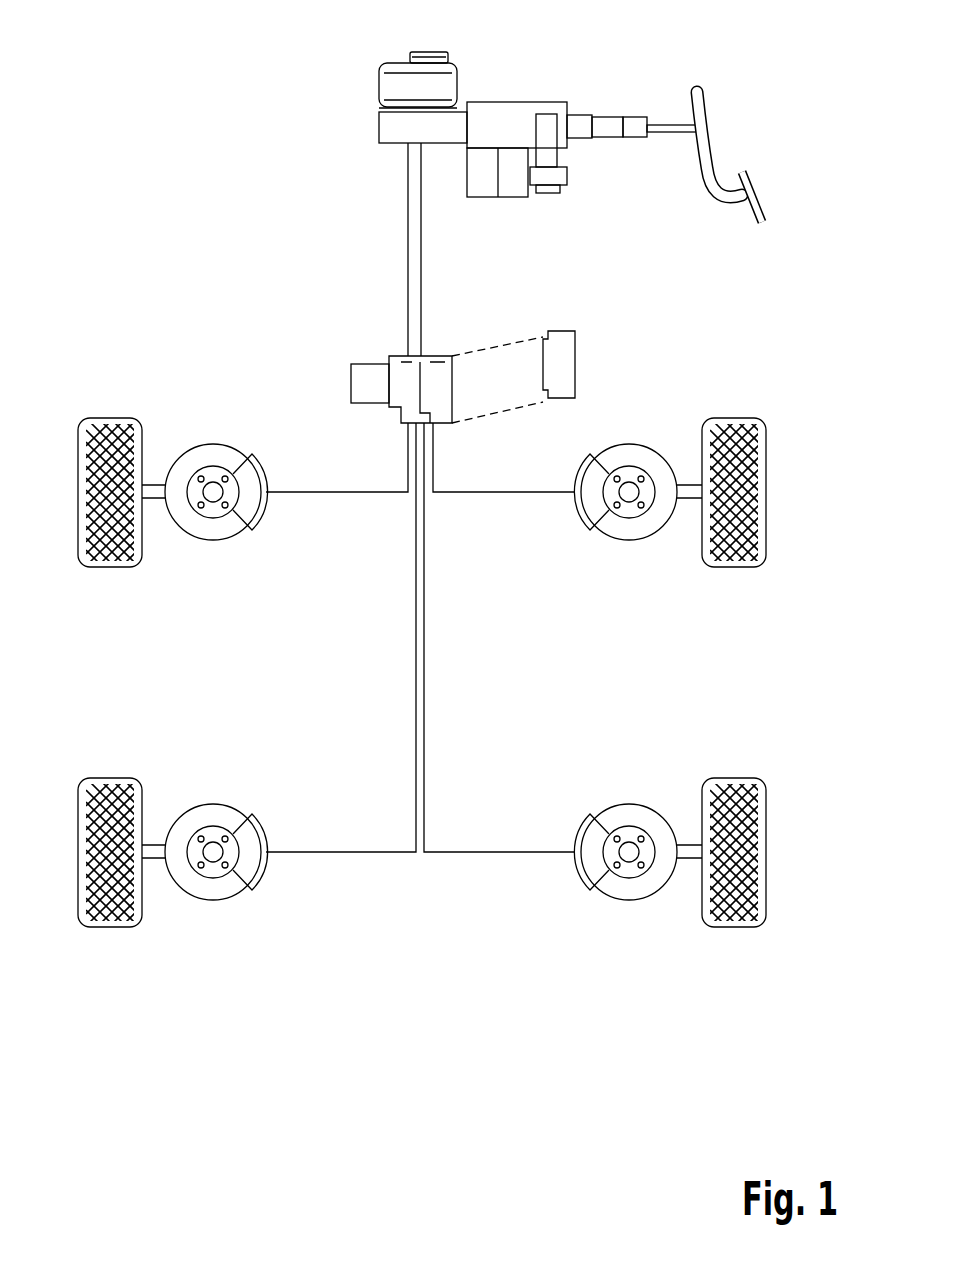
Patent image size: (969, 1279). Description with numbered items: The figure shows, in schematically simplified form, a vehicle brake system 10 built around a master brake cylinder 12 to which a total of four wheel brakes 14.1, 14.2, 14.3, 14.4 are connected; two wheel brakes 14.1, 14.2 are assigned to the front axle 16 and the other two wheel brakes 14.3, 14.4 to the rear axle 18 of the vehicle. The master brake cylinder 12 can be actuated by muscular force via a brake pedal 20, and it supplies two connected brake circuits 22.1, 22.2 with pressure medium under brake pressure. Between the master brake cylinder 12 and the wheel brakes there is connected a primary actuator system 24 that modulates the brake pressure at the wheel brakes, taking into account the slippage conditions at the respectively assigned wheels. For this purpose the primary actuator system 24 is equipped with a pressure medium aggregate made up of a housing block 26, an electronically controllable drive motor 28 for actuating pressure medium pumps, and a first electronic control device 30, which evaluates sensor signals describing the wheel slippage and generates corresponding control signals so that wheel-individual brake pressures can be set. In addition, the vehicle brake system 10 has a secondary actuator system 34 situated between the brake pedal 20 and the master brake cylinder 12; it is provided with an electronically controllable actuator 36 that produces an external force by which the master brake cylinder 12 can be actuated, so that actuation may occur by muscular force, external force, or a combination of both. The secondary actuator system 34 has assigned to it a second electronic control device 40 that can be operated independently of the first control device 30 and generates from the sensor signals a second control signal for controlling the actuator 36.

The vehicle brake system 10 is at (189, 96).
The master brake cylinder 12 is at (390, 128).
The wheel brake 14.1 is at (213, 541).
The wheel brake 14.2 is at (629, 541).
The wheel brake 14.3 is at (213, 901).
The wheel brake 14.4 is at (629, 901).
The front axle 16 is at (497, 494).
The rear axle 18 is at (497, 854).
The brake pedal 20 is at (704, 129).
The brake circuit 22.1 is at (406, 232).
The brake circuit 22.2 is at (424, 232).
The primary actuator system 24 is at (411, 343).
The housing block 26 is at (400, 358).
The drive motor 28 is at (365, 362).
The first electronic control device 30 is at (440, 362).
The secondary actuator system 34 is at (580, 86).
The actuator 36 is at (552, 160).
The second electronic control device 40 is at (555, 340).